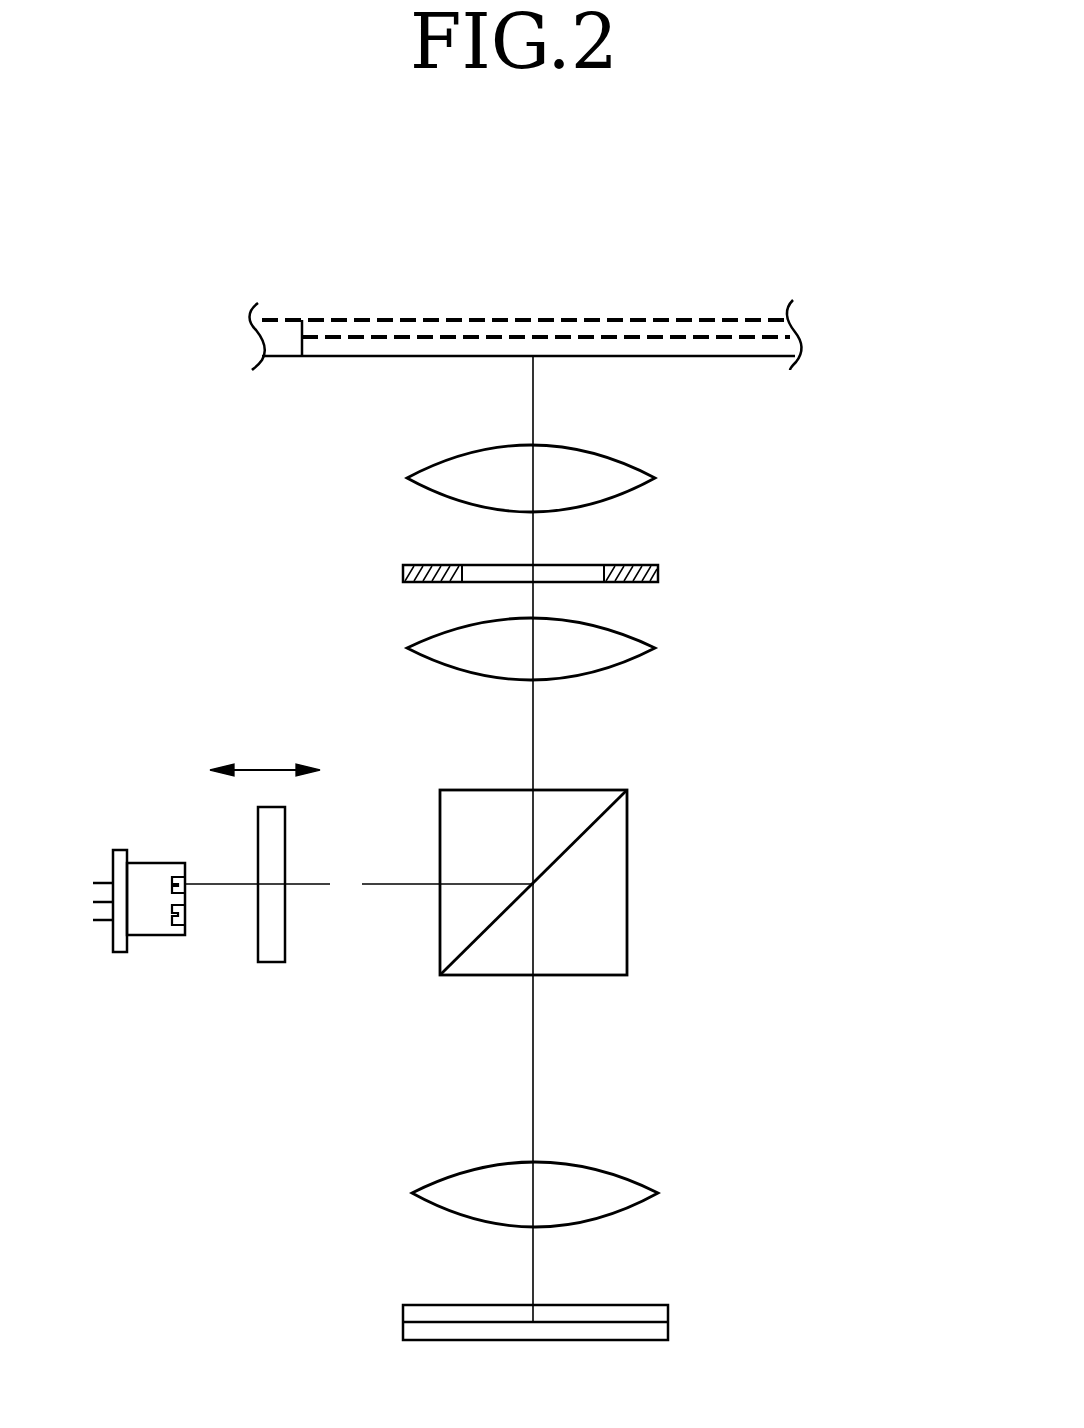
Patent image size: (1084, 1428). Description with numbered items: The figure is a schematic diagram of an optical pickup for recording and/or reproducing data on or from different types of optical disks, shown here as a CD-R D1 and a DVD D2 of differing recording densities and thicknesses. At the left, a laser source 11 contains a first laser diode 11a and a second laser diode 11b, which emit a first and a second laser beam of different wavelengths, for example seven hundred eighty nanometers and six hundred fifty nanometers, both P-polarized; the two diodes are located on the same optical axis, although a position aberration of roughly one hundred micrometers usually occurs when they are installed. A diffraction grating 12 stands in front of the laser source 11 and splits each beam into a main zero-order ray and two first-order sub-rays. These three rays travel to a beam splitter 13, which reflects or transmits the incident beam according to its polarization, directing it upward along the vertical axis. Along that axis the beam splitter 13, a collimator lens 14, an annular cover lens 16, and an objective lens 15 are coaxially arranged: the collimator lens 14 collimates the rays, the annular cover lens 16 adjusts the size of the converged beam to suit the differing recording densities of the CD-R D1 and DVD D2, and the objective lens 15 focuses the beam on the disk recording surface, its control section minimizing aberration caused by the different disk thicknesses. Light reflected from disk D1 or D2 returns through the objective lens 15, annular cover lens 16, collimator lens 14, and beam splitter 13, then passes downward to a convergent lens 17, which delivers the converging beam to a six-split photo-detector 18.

The laser source 11 is at (157, 868).
The first laser diode 11a is at (170, 886).
The second laser diode 11b is at (180, 918).
The diffraction grating 12 is at (272, 807).
The beam splitter 13 is at (627, 903).
The collimator lens 14 is at (655, 650).
The objective lens 15 is at (632, 474).
The annular cover lens 16 is at (660, 575).
The convergent lens 17 is at (640, 1192).
The 6-split photo-detector 18 is at (645, 1316).
The CD-R D1 is at (348, 320).
The DVD D2 is at (800, 336).